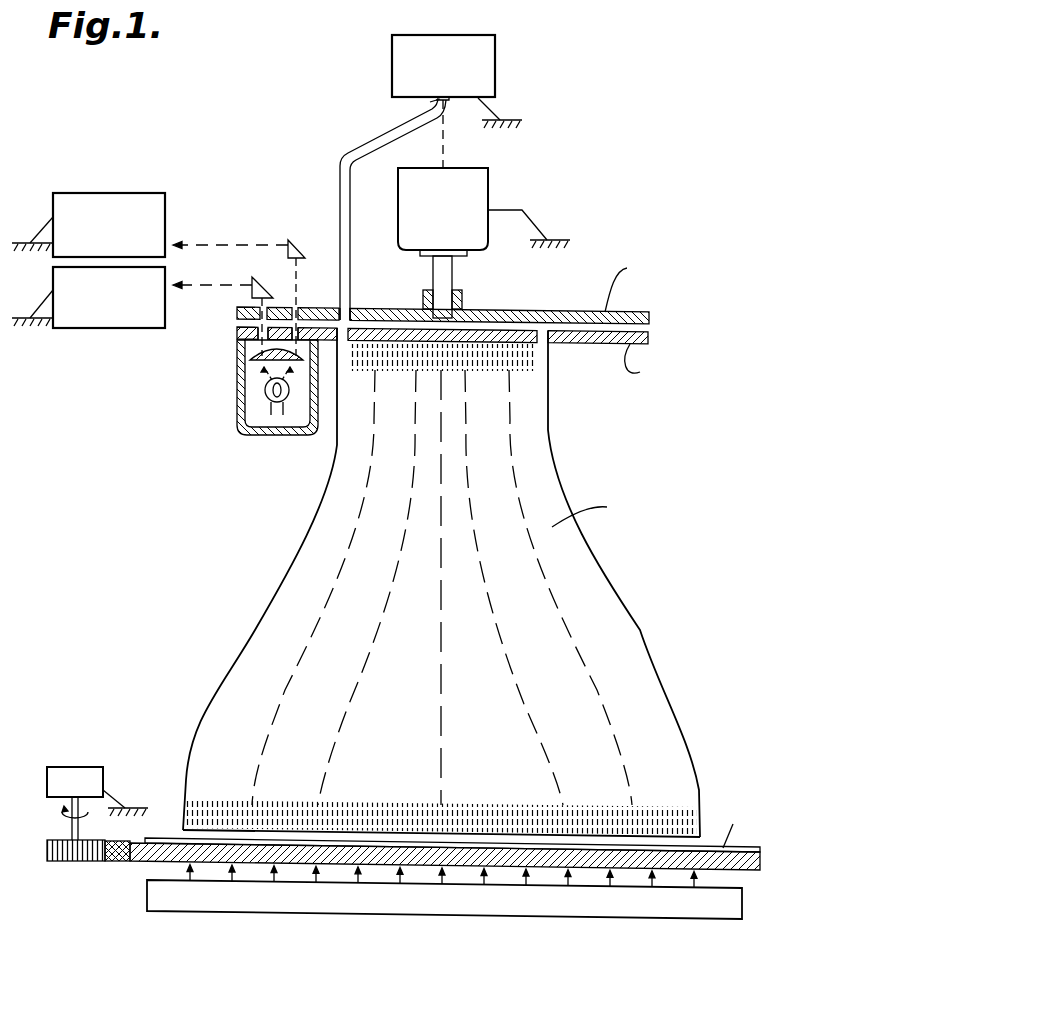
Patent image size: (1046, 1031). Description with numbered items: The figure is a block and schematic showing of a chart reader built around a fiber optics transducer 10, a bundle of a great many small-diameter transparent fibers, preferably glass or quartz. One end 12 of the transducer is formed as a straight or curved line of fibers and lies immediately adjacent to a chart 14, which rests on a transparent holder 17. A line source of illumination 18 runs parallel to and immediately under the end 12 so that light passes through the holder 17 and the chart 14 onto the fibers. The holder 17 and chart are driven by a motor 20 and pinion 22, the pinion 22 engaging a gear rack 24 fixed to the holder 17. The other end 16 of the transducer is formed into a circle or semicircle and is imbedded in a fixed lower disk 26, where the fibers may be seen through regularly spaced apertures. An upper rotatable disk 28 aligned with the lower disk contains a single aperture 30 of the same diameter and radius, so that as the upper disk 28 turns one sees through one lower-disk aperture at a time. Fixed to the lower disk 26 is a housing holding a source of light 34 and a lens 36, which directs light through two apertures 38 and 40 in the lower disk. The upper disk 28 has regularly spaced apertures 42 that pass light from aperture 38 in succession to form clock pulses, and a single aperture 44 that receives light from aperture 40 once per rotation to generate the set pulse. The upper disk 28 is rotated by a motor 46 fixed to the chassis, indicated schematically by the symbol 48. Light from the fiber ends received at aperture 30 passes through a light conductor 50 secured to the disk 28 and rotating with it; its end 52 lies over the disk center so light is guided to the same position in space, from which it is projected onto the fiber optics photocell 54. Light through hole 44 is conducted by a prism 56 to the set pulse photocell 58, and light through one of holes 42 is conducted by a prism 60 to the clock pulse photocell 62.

The fiber optics transducer 10 is at (323, 530).
The end of transducer 12 is at (488, 822).
The chart 14 is at (155, 838).
The other end of transducer 16 is at (496, 358).
The transparent holder 17 is at (762, 861).
The line source of illumination 18 is at (640, 914).
The motor 20 is at (87, 767).
The pinion 22 is at (80, 861).
The gear rack 24 is at (120, 862).
The fixed lower disk 26 is at (587, 344).
The upper rotatable disk 28 is at (523, 312).
The aperture 30 is at (352, 310).
The source of light 34 is at (266, 390).
The lens 36 is at (252, 358).
The aperture 38 is at (303, 342).
The aperture 40 is at (240, 325).
The apertures 42 is at (293, 308).
The aperture 44 is at (254, 298).
The motor 46 is at (408, 236).
The chassis symbol 48 is at (563, 241).
The light conductor 50 is at (340, 176).
The end of light conductor 52 is at (416, 106).
The fiber optics photocell 54 is at (498, 66).
The prism 56 is at (268, 276).
The set pulse photocell 58 is at (110, 328).
The prism 60 is at (300, 243).
The clock pulse photocell 62 is at (168, 172).